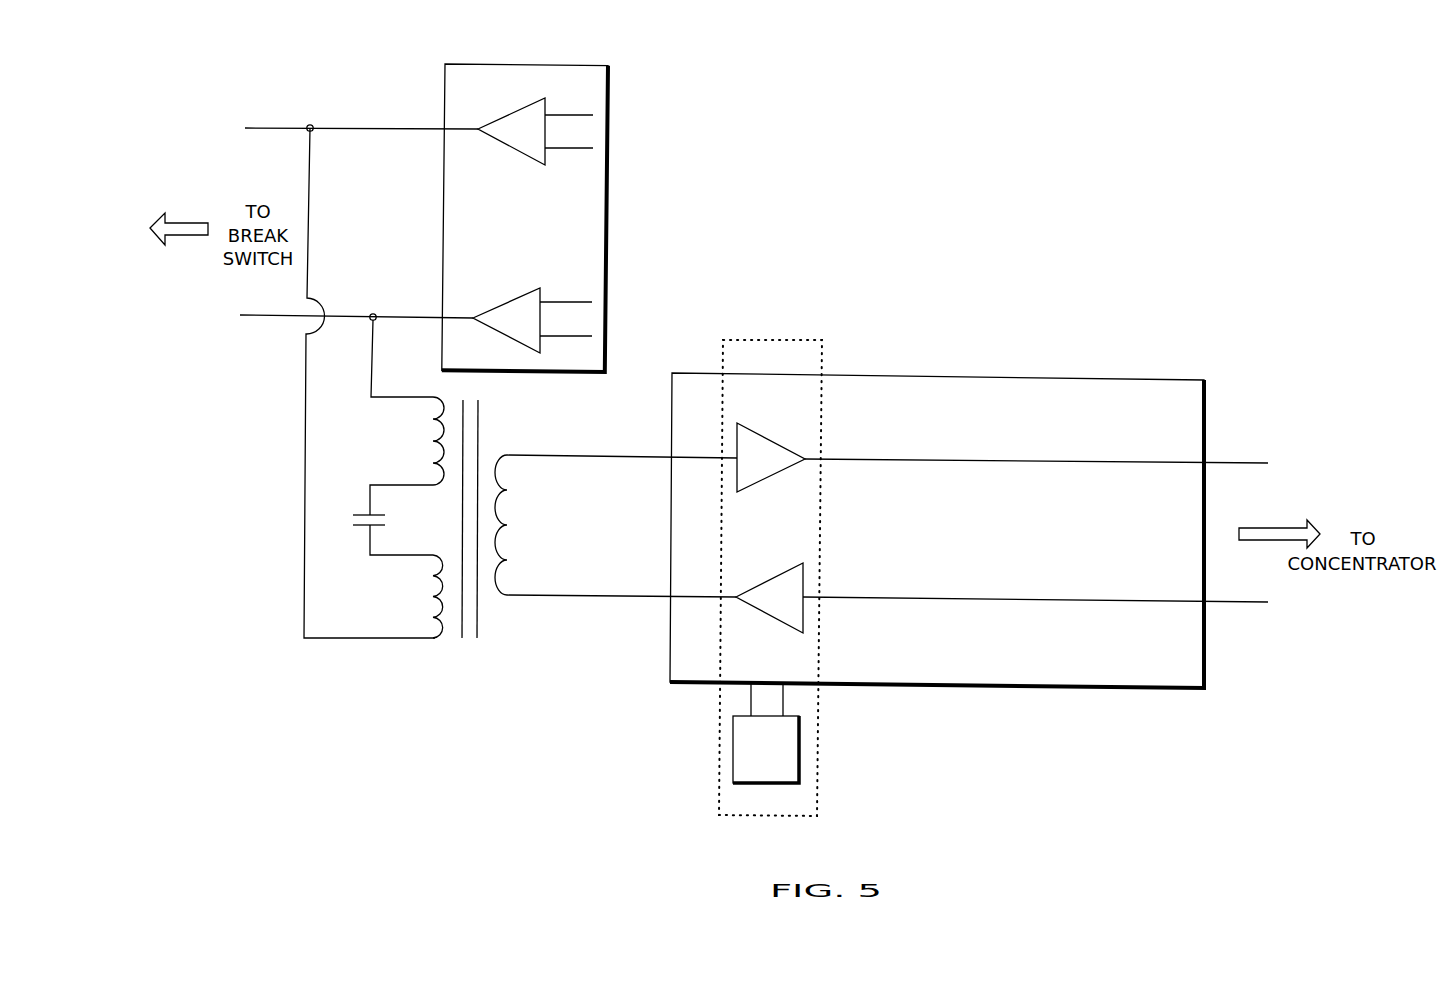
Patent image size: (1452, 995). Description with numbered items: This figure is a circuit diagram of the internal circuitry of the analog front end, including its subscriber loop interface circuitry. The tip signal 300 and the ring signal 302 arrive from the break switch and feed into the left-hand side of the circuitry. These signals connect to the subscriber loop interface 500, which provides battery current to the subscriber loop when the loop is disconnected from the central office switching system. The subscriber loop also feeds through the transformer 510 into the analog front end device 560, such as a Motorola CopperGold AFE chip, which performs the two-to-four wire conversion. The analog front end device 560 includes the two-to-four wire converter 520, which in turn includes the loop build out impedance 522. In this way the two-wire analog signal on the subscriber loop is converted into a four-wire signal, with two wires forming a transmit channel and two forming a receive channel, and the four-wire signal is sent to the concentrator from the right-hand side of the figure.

The tip signal 300 is at (334, 126).
The ring signal 302 is at (324, 314).
The subscriber loop interface 500 is at (525, 218).
The transformer 510 is at (545, 497).
The 2-to-4 wire converter 520 is at (822, 340).
The loop build out impedance 522 is at (799, 783).
The analog front end device 560 is at (969, 530).